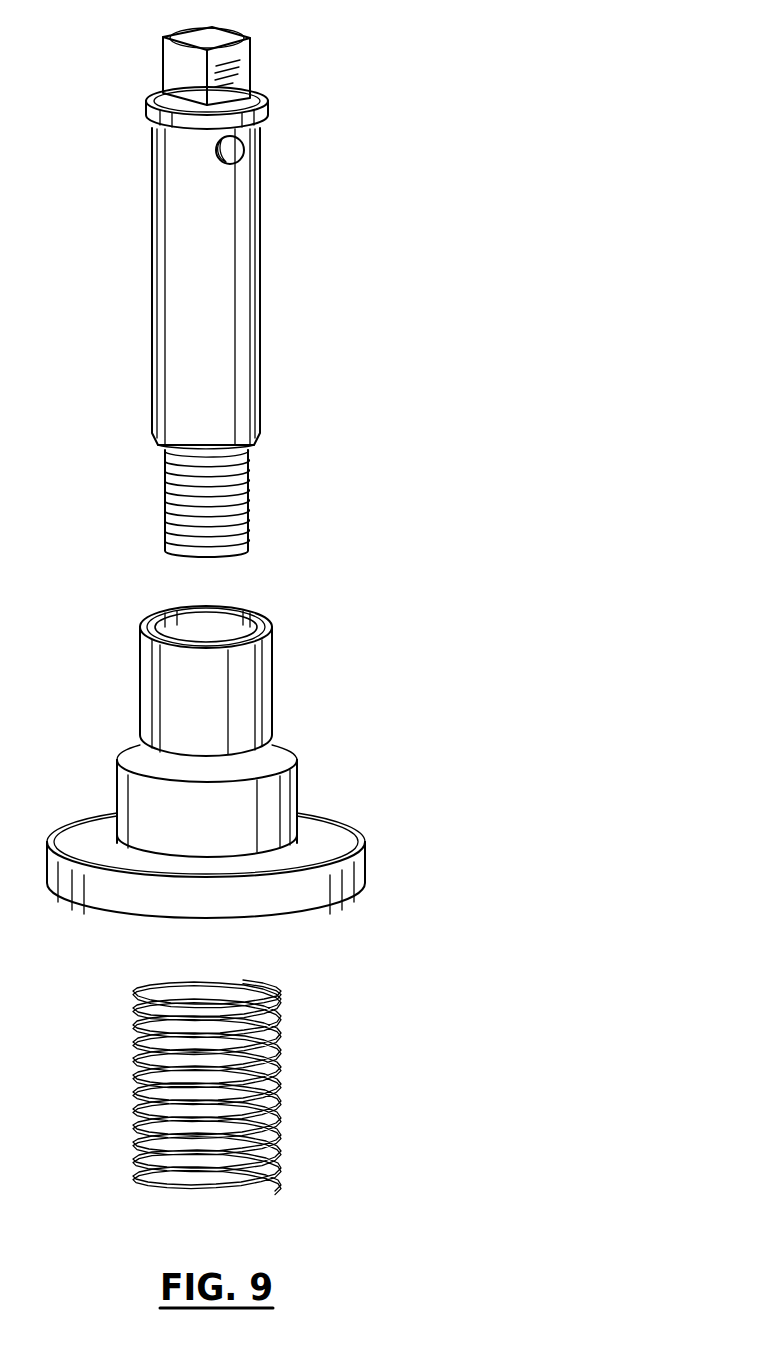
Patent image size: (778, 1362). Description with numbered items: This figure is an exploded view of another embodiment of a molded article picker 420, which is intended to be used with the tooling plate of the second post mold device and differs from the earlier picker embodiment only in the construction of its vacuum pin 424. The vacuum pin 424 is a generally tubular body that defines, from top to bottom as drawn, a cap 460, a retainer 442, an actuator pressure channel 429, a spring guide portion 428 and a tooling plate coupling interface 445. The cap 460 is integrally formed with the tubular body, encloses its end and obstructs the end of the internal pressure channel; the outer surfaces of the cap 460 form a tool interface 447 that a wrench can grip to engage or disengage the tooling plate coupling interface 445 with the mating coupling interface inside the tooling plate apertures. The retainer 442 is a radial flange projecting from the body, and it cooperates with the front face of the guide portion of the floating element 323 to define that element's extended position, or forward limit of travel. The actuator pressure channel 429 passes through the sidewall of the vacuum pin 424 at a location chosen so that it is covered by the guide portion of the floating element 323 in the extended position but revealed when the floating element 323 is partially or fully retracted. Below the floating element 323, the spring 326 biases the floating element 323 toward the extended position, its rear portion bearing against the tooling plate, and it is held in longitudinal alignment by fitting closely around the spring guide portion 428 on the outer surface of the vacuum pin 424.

The molded article picker 420 is at (463, 335).
The cap 460 is at (212, 33).
The tool interface 447 is at (245, 75).
The retainer 442 is at (148, 117).
The actuator pressure channel 429 is at (243, 150).
The vacuum pin 424 is at (260, 240).
The spring guide portion 428 is at (225, 354).
The tooling plate coupling interface 445 is at (248, 508).
The floating element 323 is at (273, 680).
The spring 326 is at (280, 1042).